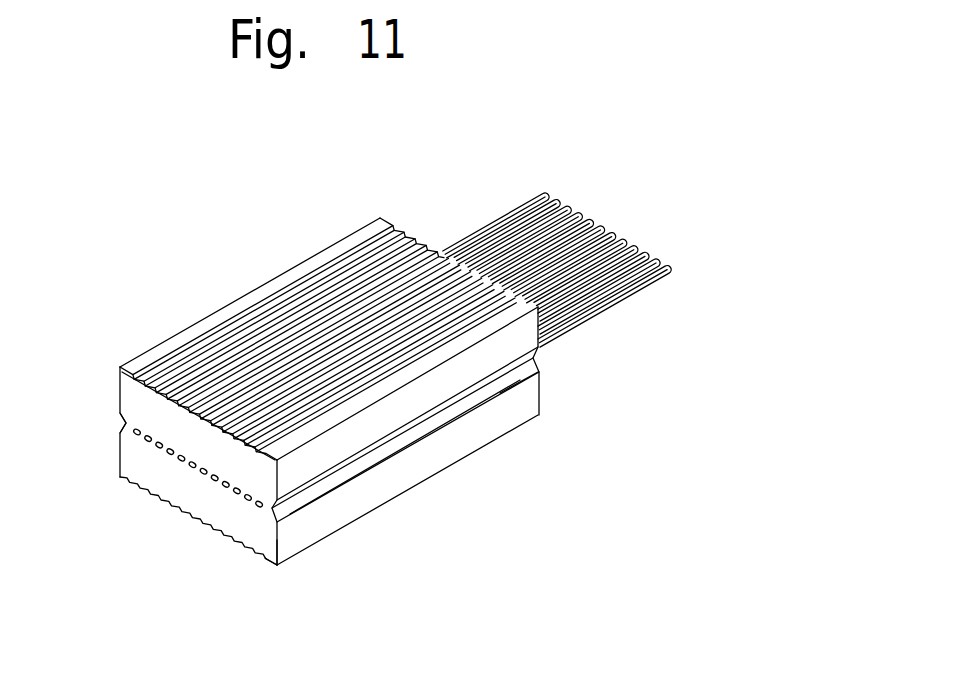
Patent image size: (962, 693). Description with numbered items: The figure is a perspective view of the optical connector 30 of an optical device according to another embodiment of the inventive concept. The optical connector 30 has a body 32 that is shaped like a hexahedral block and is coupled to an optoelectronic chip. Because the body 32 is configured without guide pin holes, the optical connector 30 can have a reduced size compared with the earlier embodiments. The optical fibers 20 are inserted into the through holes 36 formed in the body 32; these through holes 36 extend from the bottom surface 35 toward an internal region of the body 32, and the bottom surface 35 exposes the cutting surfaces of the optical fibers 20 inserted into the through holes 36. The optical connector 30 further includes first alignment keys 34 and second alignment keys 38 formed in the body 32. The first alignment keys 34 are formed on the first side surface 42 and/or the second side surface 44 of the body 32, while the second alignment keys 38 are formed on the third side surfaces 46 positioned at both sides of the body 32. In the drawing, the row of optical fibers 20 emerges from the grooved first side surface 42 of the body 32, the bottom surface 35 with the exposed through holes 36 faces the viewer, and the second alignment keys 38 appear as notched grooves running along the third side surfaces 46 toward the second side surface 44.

The optical fibers 20 is at (539, 197).
The optical connector 30 is at (208, 227).
The body 32 is at (460, 445).
The first alignment keys 34 is at (203, 413).
The bottom surface 35 is at (252, 528).
The through holes 36 is at (217, 482).
The second alignment keys 38 is at (123, 423).
The first side surface 42 is at (355, 244).
The second side surface 44 is at (272, 566).
The third side surfaces 46 is at (524, 404).